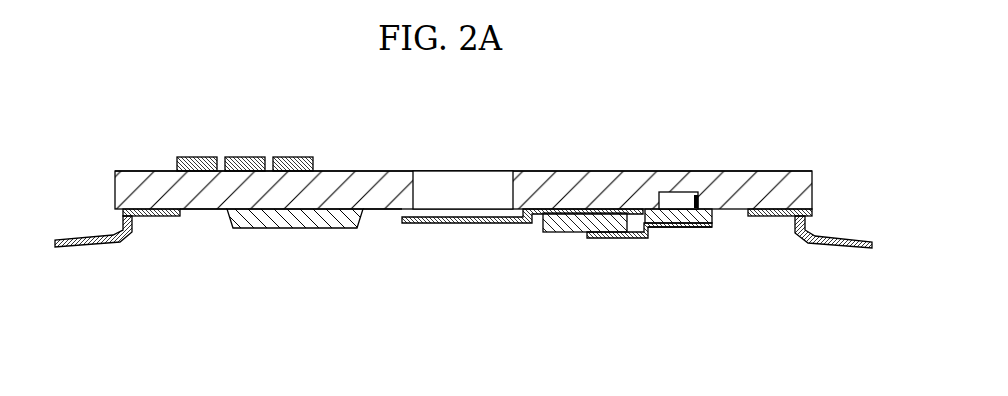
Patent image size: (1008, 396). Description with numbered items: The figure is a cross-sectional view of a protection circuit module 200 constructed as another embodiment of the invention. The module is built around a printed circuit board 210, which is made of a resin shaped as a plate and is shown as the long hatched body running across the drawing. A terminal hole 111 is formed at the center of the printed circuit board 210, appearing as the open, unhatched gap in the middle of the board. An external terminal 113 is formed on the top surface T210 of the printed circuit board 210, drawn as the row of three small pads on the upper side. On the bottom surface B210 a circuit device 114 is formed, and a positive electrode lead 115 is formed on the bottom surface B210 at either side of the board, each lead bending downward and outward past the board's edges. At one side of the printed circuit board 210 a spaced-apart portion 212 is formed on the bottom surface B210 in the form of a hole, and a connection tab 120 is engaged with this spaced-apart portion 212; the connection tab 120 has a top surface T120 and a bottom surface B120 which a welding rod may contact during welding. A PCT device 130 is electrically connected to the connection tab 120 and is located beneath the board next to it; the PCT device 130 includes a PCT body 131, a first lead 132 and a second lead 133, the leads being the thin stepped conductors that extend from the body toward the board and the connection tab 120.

The protection circuit module 200 is at (58, 110).
The printed circuit board 210 is at (775, 178).
The top surface of the printed circuit board T210 is at (146, 158).
The bottom surface of the printed circuit board B210 is at (203, 219).
The terminal hole 111 is at (452, 180).
The external terminal 113 is at (277, 157).
The circuit device 114 is at (292, 229).
The positive electrode lead 115 is at (88, 248).
The PCT device 130 is at (662, 117).
The PCT body 131 is at (593, 220).
The first lead 132 is at (644, 212).
The second lead 133 is at (522, 209).
The spaced-apart portion 212 is at (676, 196).
The top surface of the connection tab T120 is at (699, 196).
The connection tab 120 is at (712, 219).
The bottom surface of the connection tab B120 is at (676, 237).